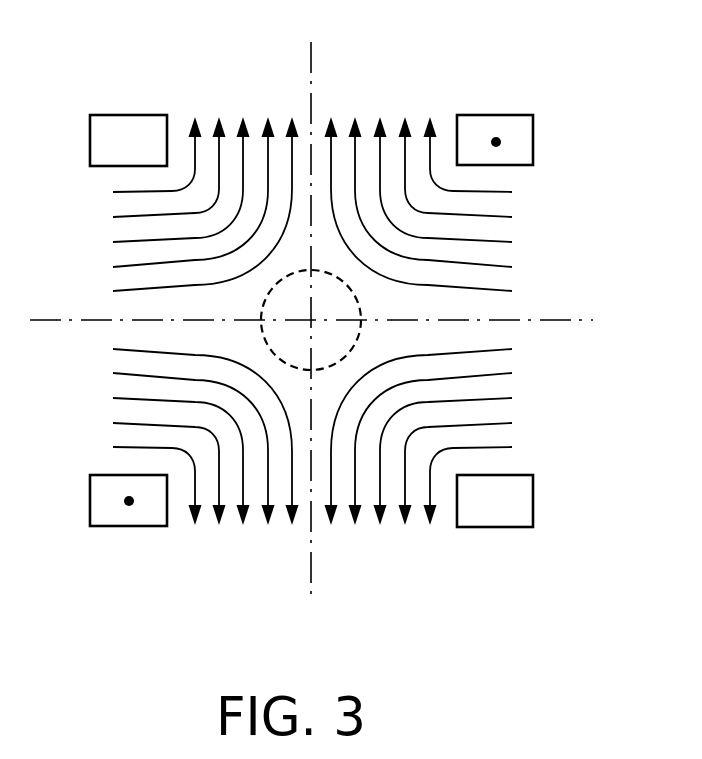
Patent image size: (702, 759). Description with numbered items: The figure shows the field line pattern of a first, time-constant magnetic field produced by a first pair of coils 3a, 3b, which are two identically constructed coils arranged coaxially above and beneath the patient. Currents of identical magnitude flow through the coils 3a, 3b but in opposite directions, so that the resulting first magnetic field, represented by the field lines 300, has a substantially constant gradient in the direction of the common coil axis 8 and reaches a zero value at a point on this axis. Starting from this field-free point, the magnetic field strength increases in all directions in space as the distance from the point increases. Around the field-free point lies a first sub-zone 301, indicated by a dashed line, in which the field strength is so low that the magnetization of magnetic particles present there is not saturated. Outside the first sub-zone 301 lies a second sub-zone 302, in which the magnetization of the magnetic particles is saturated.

The coil 3a is at (130, 115).
The coil 3b is at (129, 527).
The common coil axis 8 is at (312, 62).
The field lines 300 is at (503, 356).
The first sub-zone 301 is at (348, 311).
The second sub-zone 302 is at (118, 411).